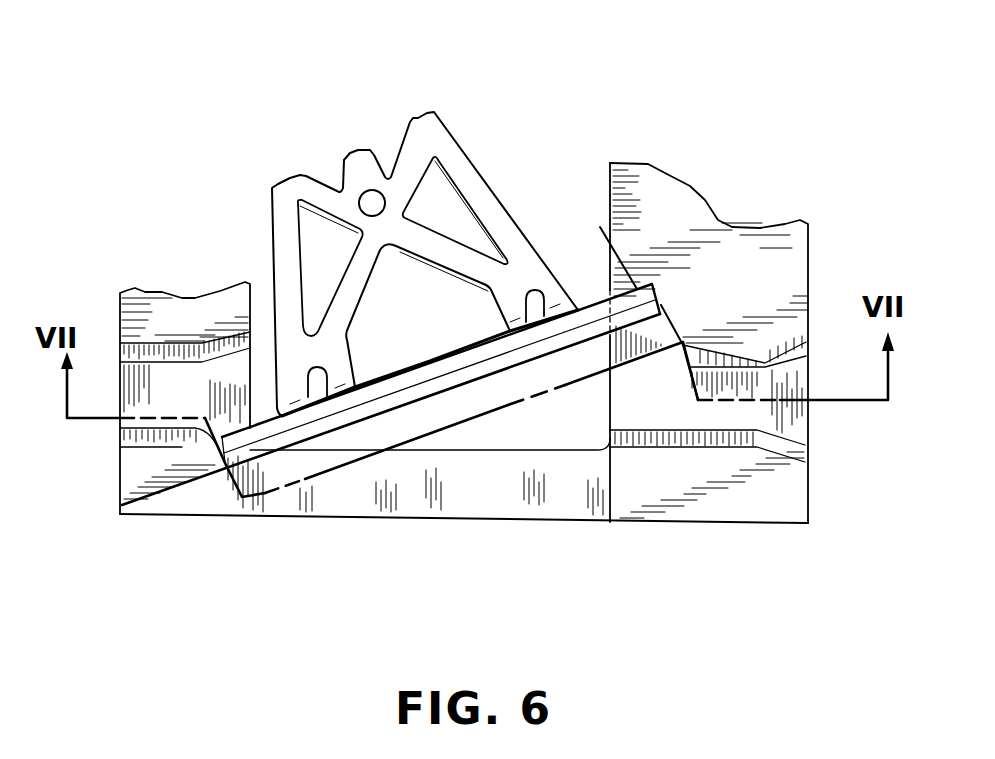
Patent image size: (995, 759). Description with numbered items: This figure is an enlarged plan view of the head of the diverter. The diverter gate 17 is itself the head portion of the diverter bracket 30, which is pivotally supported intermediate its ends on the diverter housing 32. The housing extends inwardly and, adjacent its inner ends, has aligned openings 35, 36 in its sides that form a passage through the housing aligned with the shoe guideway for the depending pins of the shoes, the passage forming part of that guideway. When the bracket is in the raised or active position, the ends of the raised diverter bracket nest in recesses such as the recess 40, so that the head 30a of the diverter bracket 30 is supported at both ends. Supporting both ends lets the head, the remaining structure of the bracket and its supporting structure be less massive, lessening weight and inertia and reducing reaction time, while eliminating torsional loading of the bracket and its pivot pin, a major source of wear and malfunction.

The diverter gate 17 is at (497, 368).
The diverter bracket 30 is at (455, 135).
The head of the diverter bracket 30a is at (458, 360).
The diverter housing 32 is at (178, 515).
The aligned opening 35 is at (752, 417).
The aligned opening 36 is at (178, 385).
The recess 40 is at (600, 227).